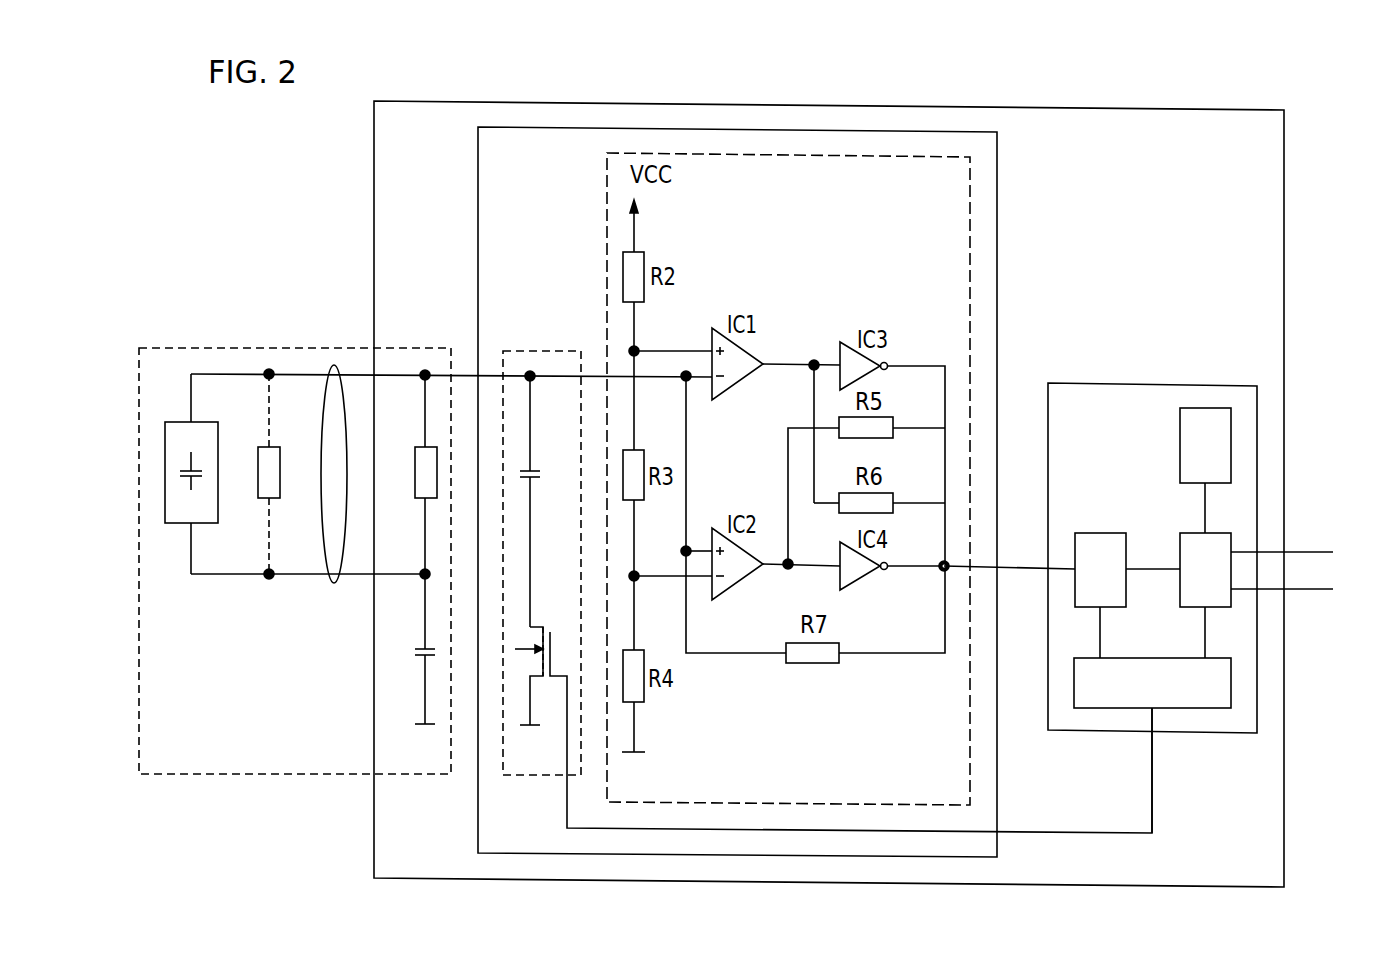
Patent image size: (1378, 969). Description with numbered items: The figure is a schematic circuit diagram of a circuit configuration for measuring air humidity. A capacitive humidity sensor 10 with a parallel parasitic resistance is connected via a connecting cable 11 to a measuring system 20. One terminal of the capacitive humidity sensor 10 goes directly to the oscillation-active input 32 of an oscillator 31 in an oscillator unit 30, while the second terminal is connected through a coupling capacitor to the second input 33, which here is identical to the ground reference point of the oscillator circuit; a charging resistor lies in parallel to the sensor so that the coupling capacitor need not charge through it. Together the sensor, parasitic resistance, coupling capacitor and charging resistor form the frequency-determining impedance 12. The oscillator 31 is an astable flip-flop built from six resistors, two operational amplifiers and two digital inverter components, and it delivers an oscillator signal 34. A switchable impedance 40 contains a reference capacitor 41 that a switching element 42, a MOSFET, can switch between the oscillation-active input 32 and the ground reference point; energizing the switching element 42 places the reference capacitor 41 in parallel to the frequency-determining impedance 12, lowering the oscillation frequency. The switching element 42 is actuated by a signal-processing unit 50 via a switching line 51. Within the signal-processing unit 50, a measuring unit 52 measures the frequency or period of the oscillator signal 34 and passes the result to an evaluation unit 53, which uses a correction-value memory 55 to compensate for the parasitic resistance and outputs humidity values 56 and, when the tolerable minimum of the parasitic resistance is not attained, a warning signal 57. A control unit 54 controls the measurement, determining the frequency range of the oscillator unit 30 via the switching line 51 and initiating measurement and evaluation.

The capacitive humidity sensor 10 is at (165, 455).
The connecting cable 11 is at (333, 365).
The frequency-determining impedance 12 is at (229, 347).
The measuring system 20 is at (1284, 298).
The oscillator unit 30 is at (830, 128).
The oscillator 31 is at (606, 203).
The oscillation-active input 32 is at (605, 342).
The second input 33 is at (635, 727).
The oscillator signal 34 is at (1024, 562).
The switchable impedance 40 is at (531, 351).
The reference capacitor 41 is at (536, 470).
The switching element 42 is at (533, 625).
The signal-processing unit 50 is at (1205, 383).
The switching line 51 is at (1065, 833).
The measuring unit 52 is at (1095, 538).
The evaluation unit 53 is at (1185, 583).
The control unit 54 is at (1095, 672).
The correction-value memory 55 is at (1193, 432).
The humidity values 56 is at (1313, 553).
The warning signal 57 is at (1313, 592).